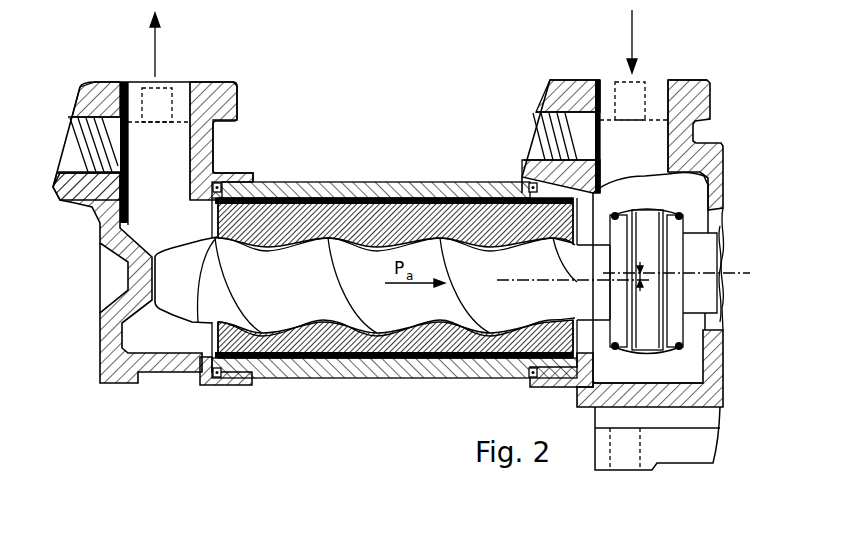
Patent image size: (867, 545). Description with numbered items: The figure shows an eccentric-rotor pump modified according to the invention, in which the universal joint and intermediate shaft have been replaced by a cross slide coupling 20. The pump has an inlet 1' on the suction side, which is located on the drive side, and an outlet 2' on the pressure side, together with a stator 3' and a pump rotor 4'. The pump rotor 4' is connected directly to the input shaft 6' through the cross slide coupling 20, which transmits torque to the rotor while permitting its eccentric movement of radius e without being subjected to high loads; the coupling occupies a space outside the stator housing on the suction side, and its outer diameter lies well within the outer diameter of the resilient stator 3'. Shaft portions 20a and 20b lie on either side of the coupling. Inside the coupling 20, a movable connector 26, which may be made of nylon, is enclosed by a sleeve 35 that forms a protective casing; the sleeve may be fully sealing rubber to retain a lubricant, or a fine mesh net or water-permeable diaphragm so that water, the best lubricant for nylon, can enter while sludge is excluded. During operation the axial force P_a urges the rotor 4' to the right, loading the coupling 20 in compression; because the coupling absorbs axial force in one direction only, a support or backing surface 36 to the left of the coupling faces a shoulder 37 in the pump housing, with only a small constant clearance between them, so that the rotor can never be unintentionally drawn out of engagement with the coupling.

The inlet 1' is at (635, 110).
The outlet 2' is at (153, 119).
The stator 3' is at (396, 270).
The pump rotor 4' is at (396, 340).
The input shaft 6' is at (734, 274).
The cross slide coupling 20 is at (692, 221).
The rotor shaft portion 20a is at (583, 308).
The drive shaft portion 20b is at (707, 300).
The movable connector 26 is at (658, 340).
The sleeve 35 is at (657, 358).
The support or backing surface 36 is at (169, 301).
The shoulder 37 is at (136, 304).